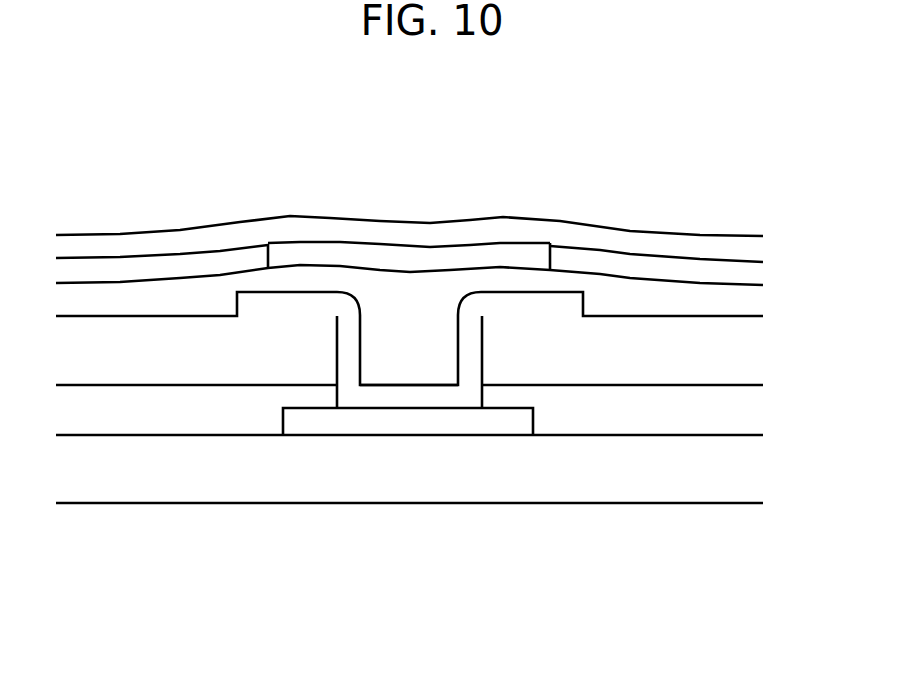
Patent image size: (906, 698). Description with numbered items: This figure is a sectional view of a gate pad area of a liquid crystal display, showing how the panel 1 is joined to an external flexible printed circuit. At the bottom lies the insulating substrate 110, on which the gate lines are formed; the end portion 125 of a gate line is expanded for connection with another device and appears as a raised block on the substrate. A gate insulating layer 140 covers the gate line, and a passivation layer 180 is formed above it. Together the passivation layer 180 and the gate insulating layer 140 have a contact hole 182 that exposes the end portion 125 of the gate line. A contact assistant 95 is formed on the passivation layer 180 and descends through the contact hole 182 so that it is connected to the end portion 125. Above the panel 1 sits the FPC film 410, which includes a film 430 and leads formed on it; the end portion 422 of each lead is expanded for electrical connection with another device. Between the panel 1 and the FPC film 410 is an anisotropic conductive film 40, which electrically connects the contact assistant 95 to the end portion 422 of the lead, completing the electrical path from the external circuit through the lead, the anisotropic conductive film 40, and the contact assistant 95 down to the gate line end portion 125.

The panel 1 is at (725, 555).
The anisotropic conductive film 40 is at (523, 278).
The contact assistant 95 is at (415, 400).
The insulating substrate 110 is at (503, 493).
The end portion of gate line 125 is at (328, 422).
The gate insulating layer 140 is at (615, 423).
The passivation layer 180 is at (714, 372).
The contact hole 182 is at (360, 249).
The FPC film 410 is at (409, 193).
The end portion of lead 422 is at (398, 160).
The film 430 is at (409, 235).